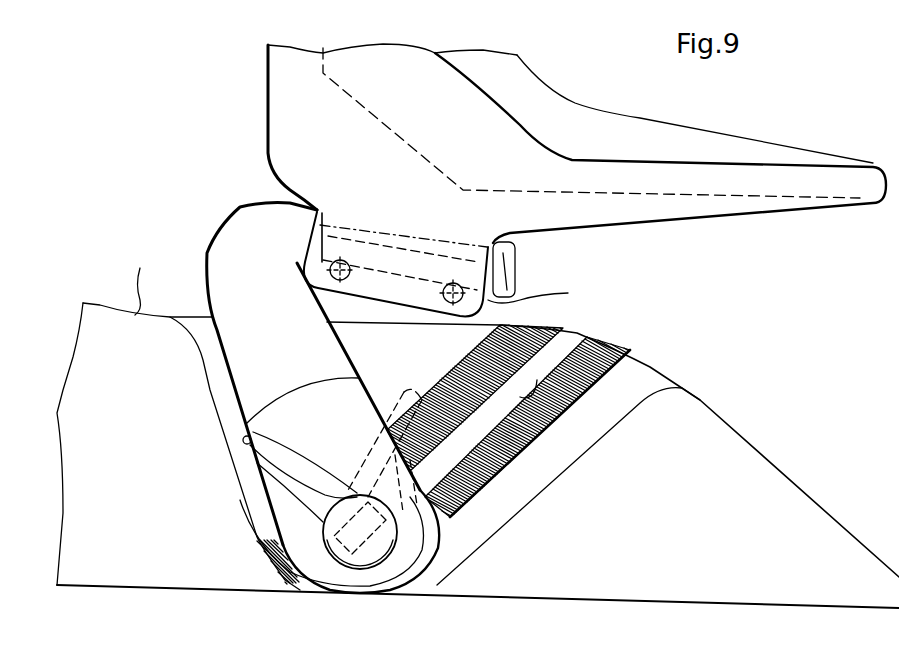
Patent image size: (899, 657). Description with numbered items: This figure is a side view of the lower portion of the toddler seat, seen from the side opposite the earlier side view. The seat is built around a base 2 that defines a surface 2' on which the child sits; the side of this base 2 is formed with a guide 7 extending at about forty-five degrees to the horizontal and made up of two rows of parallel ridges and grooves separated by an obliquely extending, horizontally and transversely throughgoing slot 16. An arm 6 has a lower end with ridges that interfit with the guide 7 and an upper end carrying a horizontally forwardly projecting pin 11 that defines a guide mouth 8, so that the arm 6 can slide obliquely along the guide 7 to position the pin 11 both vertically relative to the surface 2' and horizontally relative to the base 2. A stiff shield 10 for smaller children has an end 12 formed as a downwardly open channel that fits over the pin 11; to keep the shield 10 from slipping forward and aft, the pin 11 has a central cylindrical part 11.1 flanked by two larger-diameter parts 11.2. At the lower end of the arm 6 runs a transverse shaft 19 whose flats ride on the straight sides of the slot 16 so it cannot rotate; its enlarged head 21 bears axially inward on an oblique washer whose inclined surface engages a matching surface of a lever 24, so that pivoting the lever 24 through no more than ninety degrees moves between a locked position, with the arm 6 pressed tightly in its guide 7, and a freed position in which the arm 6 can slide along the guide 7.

The shield 10 is at (503, 162).
The pin 11 is at (434, 248).
The central cylindrical part 11.1 is at (405, 233).
The larger-diameter parts 11.2 is at (320, 230).
The end 12 is at (541, 292).
The base 2 is at (478, 455).
The surface 2' is at (136, 280).
The arm 6 is at (250, 323).
The guide 7 is at (460, 372).
The guide mouth 8 is at (330, 304).
The slot 16 is at (540, 405).
The lever 24 is at (278, 462).
The shaft 19 is at (358, 545).
The enlarged head 21 is at (387, 553).